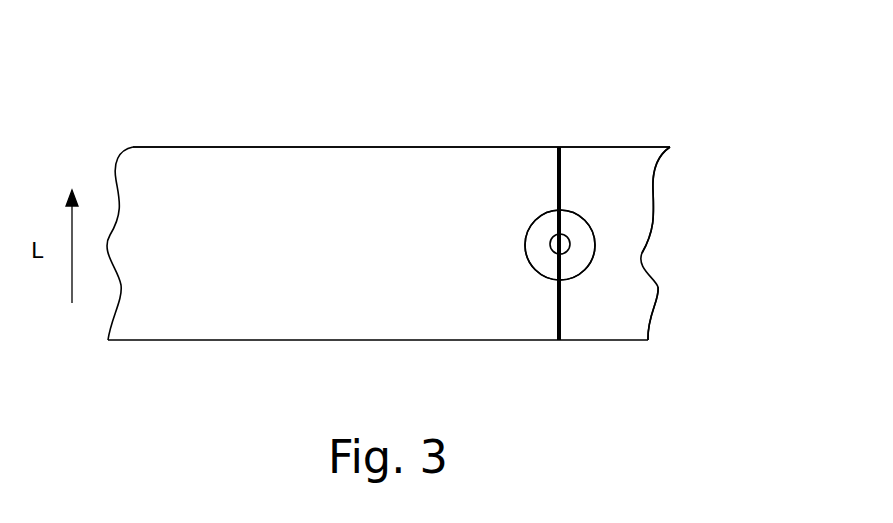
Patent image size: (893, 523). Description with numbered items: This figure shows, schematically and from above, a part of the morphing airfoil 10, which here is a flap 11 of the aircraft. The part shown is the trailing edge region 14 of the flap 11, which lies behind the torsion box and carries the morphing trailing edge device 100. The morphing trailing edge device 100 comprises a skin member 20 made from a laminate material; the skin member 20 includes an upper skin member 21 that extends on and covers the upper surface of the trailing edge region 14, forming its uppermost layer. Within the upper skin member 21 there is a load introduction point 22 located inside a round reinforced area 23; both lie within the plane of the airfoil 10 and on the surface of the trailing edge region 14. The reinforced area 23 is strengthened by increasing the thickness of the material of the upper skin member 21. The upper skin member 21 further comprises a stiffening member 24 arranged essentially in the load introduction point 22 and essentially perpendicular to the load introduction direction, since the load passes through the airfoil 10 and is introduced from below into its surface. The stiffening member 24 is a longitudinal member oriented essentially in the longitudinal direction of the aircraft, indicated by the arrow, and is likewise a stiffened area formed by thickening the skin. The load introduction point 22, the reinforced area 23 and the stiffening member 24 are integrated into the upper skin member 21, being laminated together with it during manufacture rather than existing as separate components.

The morphing airfoil 10 is at (200, 120).
The flap 11 is at (232, 80).
The morphing trailing edge device 100 is at (560, 115).
The stiffening member 24 is at (563, 158).
The reinforced area 23 is at (579, 272).
The load introduction point 22 is at (551, 247).
The skin member 20 is at (638, 165).
The upper skin member 21 is at (638, 203).
The trailing edge region 14 is at (638, 297).